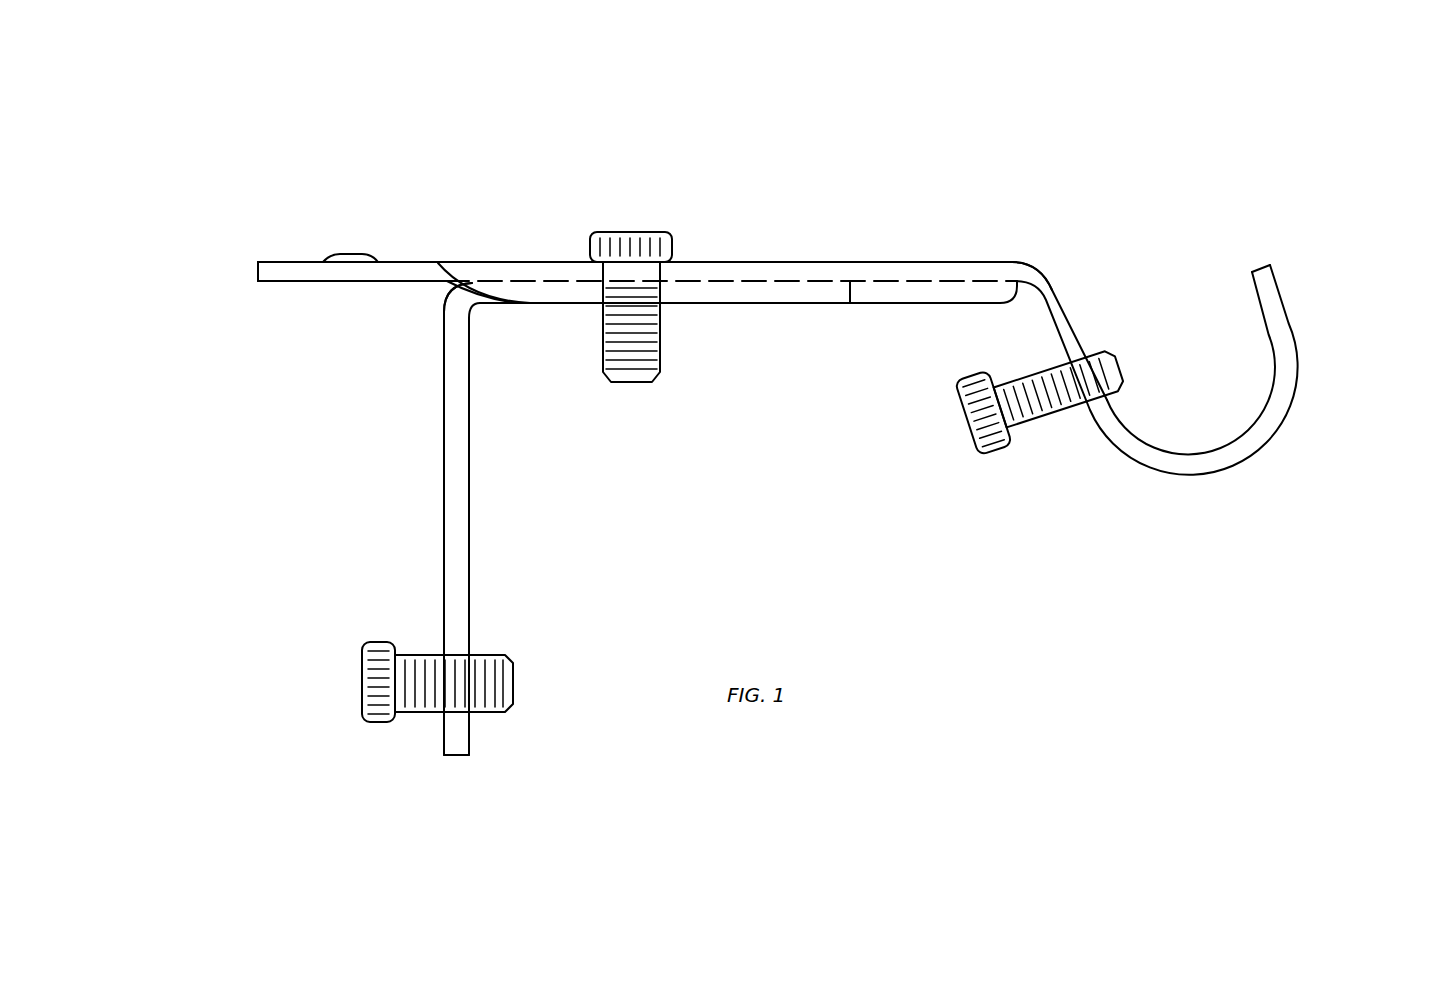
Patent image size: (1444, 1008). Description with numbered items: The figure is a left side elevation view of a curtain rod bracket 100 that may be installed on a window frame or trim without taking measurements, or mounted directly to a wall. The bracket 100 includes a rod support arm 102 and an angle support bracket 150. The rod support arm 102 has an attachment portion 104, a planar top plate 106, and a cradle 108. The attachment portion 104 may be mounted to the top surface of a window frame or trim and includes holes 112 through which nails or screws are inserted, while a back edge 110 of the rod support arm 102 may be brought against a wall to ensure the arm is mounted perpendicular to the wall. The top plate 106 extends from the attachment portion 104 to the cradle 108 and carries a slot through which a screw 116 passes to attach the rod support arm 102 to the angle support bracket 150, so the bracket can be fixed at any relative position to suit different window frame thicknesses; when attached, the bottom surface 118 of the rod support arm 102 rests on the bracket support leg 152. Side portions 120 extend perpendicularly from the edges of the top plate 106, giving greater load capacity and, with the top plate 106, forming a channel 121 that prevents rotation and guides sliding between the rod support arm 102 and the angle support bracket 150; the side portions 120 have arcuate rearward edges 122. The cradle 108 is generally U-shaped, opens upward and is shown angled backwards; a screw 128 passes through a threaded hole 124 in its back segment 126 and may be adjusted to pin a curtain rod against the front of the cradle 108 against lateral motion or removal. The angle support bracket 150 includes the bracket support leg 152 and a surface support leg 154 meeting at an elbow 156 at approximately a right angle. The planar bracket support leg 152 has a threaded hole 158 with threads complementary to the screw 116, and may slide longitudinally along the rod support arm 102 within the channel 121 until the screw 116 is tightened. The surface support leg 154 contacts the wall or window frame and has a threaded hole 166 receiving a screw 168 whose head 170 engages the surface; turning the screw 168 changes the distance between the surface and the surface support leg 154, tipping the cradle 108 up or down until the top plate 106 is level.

The curtain rod bracket 100 is at (1056, 158).
The rod support arm 102 is at (869, 257).
The attachment portion 104 is at (387, 230).
The top plate 106 is at (523, 260).
The cradle 108 is at (1318, 288).
The back edge 110 is at (258, 270).
The holes 112 is at (350, 255).
The screw 116 is at (628, 232).
The bottom surface 118 is at (380, 285).
The side portions 120 is at (885, 297).
The channel 121 is at (941, 308).
The arcuate rearward edges 122 is at (478, 297).
The threaded hole 124 is at (1085, 405).
The back segment 126 is at (1062, 300).
The screw 128 is at (993, 443).
The angle support bracket 150 is at (375, 466).
The bracket support leg 152 is at (782, 310).
The surface support leg 154 is at (475, 491).
The elbow 156 is at (450, 297).
The threaded hole 158 is at (657, 290).
The threaded hole 166 is at (469, 712).
The screw 168 is at (420, 713).
The head 170 is at (377, 712).